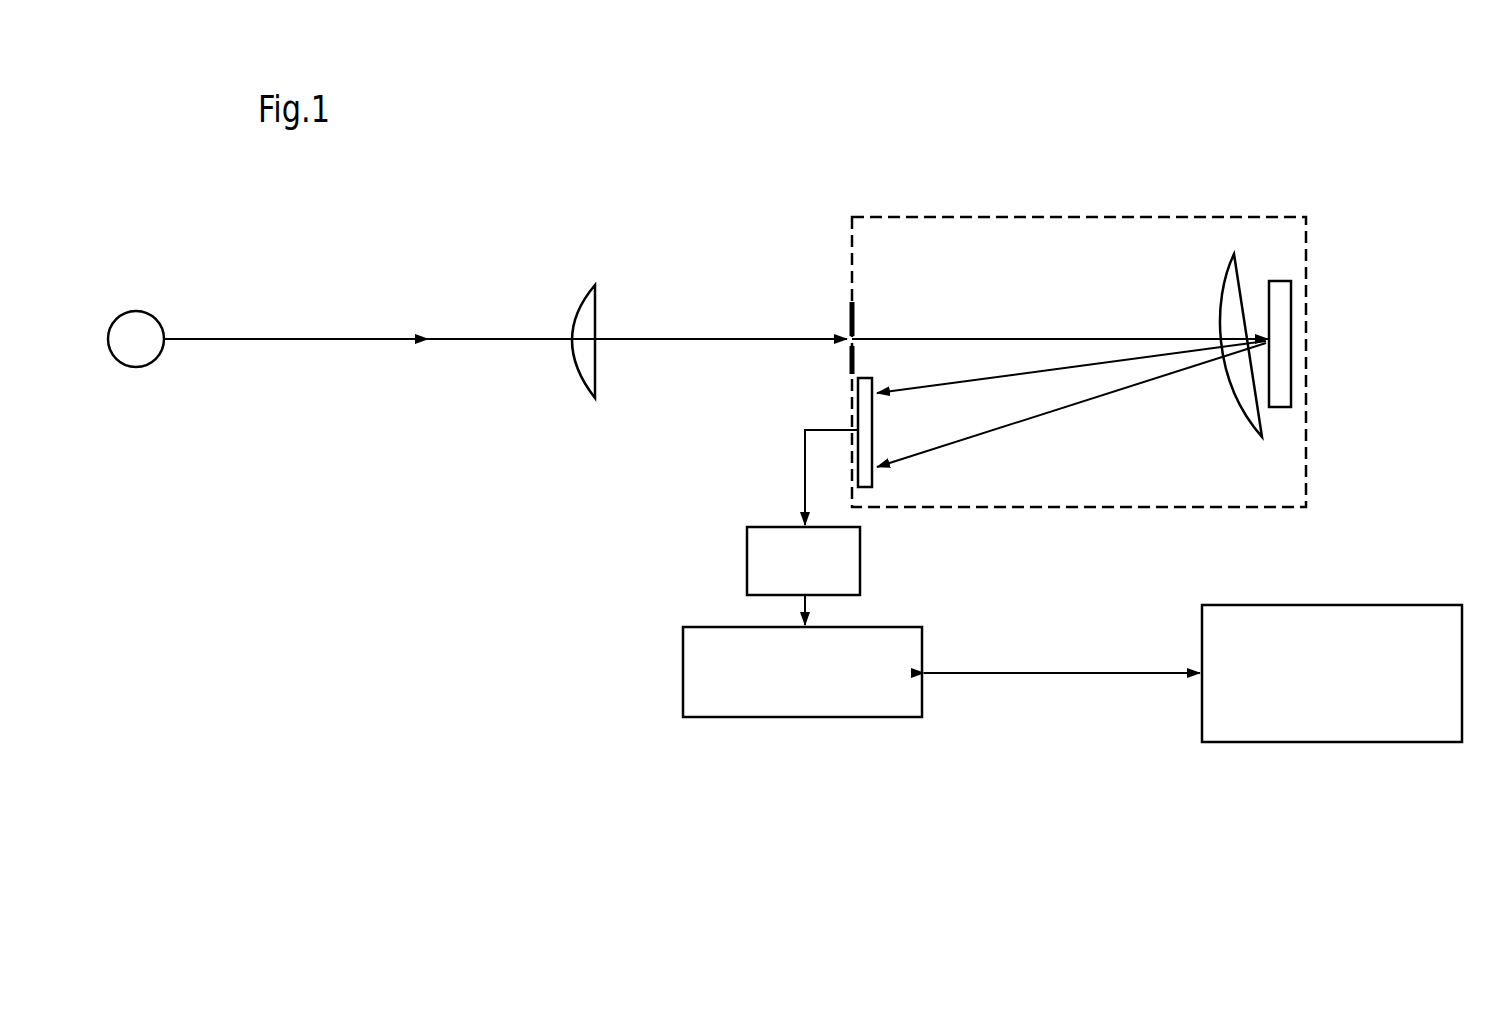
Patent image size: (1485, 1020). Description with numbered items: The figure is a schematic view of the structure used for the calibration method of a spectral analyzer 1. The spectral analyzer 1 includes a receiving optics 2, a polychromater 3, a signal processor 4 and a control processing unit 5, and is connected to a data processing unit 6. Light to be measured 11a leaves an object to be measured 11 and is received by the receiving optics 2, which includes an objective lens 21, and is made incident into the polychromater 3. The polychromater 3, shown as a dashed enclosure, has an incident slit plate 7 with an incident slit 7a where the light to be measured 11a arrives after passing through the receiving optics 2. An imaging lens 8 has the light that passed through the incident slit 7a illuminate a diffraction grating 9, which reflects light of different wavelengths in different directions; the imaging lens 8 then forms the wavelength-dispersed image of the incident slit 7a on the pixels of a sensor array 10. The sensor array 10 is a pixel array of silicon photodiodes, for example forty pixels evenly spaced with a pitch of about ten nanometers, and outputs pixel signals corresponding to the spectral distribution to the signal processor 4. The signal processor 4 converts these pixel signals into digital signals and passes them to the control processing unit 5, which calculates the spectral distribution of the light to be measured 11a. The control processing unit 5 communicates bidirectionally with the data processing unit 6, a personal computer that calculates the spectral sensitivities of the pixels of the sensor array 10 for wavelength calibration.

The spectral analyzer 1 is at (600, 676).
The receiving optics 2 is at (554, 363).
The polychromater 3 is at (1156, 215).
The signal processor 4 is at (814, 573).
The control processing unit 5 is at (822, 686).
The data processing unit 6 is at (1337, 693).
The incident slit plate 7 is at (854, 319).
The incident slit 7a is at (843, 351).
The imaging lens 8 is at (1229, 293).
The diffraction grating 9 is at (1292, 307).
The sensor array 10 is at (874, 432).
The object to be measured 11 is at (150, 356).
The light to be measured 11a is at (308, 338).
The objective lens 21 is at (578, 325).